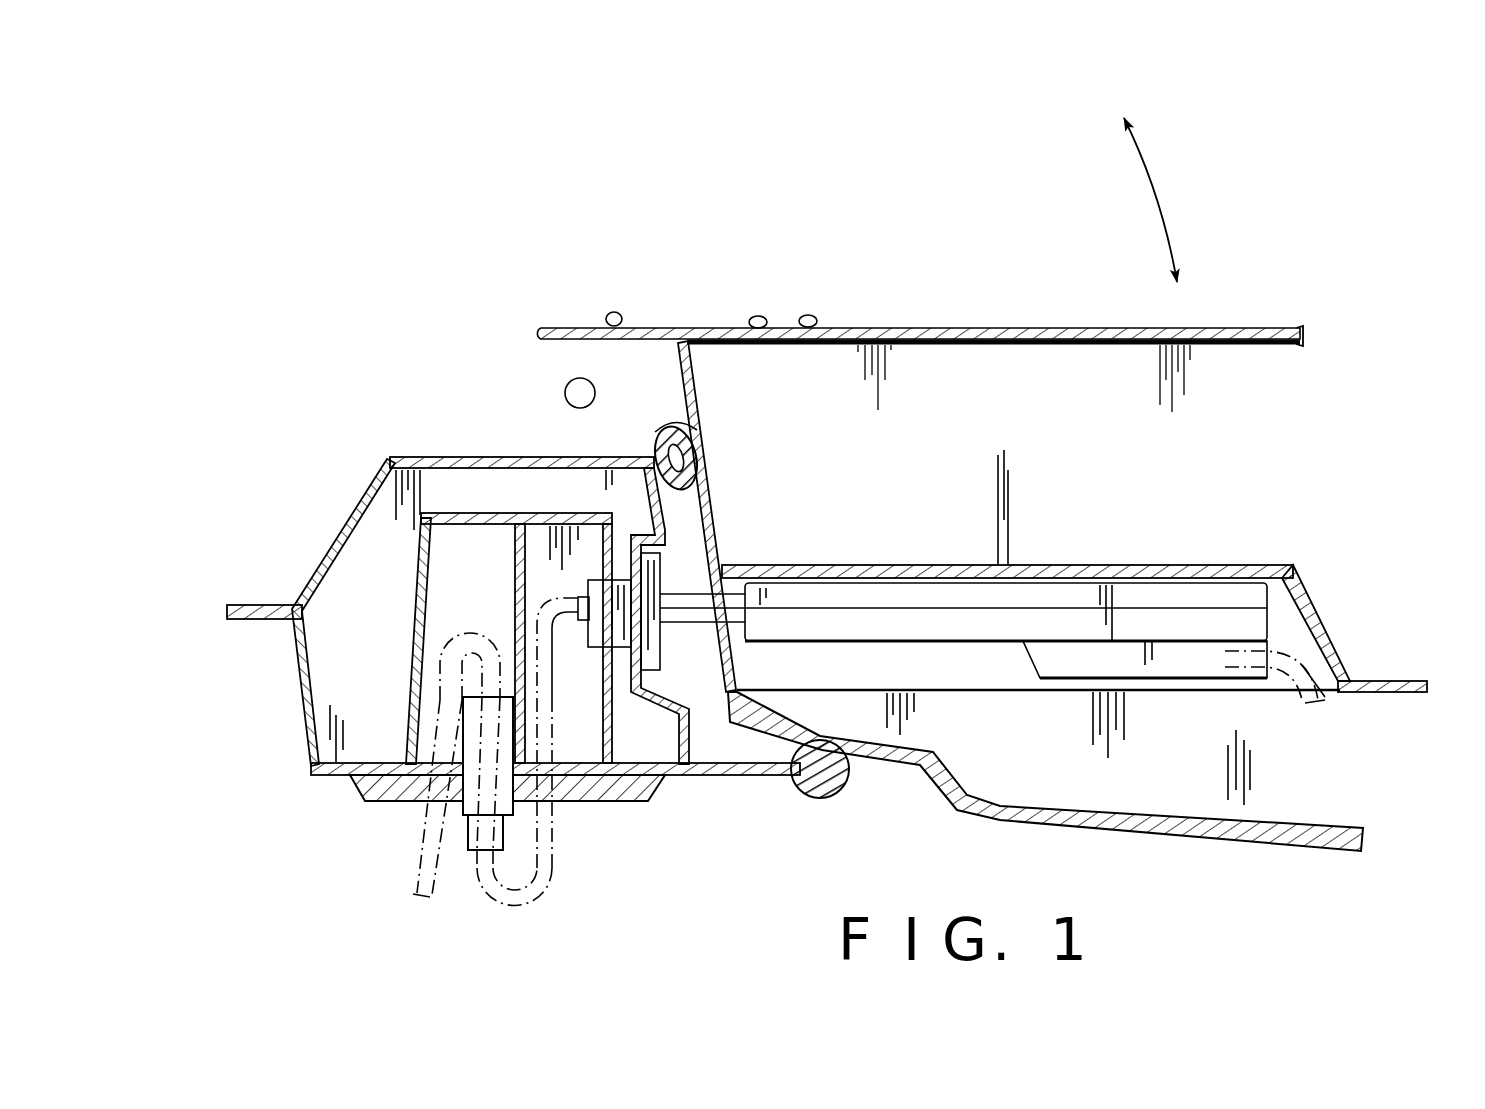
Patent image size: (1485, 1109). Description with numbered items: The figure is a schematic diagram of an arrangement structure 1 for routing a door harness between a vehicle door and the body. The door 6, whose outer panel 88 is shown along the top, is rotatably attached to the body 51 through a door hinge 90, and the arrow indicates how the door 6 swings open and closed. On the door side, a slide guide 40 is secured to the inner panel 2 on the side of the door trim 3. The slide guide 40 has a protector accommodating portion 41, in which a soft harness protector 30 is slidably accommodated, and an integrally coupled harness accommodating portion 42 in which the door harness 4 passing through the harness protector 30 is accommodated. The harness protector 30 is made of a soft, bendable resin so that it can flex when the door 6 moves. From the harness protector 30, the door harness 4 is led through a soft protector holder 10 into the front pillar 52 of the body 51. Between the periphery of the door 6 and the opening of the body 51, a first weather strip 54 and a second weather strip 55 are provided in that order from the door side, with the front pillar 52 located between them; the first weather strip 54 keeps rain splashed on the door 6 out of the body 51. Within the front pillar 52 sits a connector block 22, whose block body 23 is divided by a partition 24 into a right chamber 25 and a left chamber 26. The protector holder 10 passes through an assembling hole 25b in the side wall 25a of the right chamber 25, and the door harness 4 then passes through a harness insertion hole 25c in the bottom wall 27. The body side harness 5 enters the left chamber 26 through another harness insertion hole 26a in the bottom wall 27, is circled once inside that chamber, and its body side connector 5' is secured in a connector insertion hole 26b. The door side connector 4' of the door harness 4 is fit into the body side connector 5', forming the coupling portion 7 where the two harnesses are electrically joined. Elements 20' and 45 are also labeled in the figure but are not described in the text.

The arrangement structure 1 is at (681, 686).
The inner panel 2 is at (1028, 562).
The door trim 3 is at (1258, 818).
The door harness 4 is at (982, 772).
The door side connector 4' is at (523, 909).
The body side harness 5 is at (397, 829).
The body side connector 5' is at (423, 689).
The door 6 is at (960, 323).
The coupling portion 7 is at (524, 807).
The protector holder 10 is at (668, 553).
The protrusions 20' is at (711, 292).
The connector block 22 is at (487, 486).
The block body 23 is at (440, 506).
The partition 24 is at (515, 598).
The right chamber 25 is at (520, 510).
The side wall 25a is at (616, 510).
The assembling hole 25b is at (650, 644).
The harness insertion hole 25c is at (585, 800).
The left chamber 26 is at (436, 602).
The harness insertion hole 26a is at (428, 794).
The connector insertion hole 26b is at (437, 800).
The bottom wall 27 is at (653, 800).
The harness protector 30 is at (693, 592).
The slide guide 40 is at (982, 650).
The protector accommodating portion 41 is at (897, 590).
The harness accommodating portion 42 is at (1120, 640).
The line 45 is at (1270, 632).
The body 51 is at (348, 808).
The front pillar 52 is at (348, 504).
The first weather strip 54 is at (698, 427).
The second weather strip 55 is at (840, 785).
The outer panel 88 is at (1255, 330).
The door hinge 90 is at (596, 392).